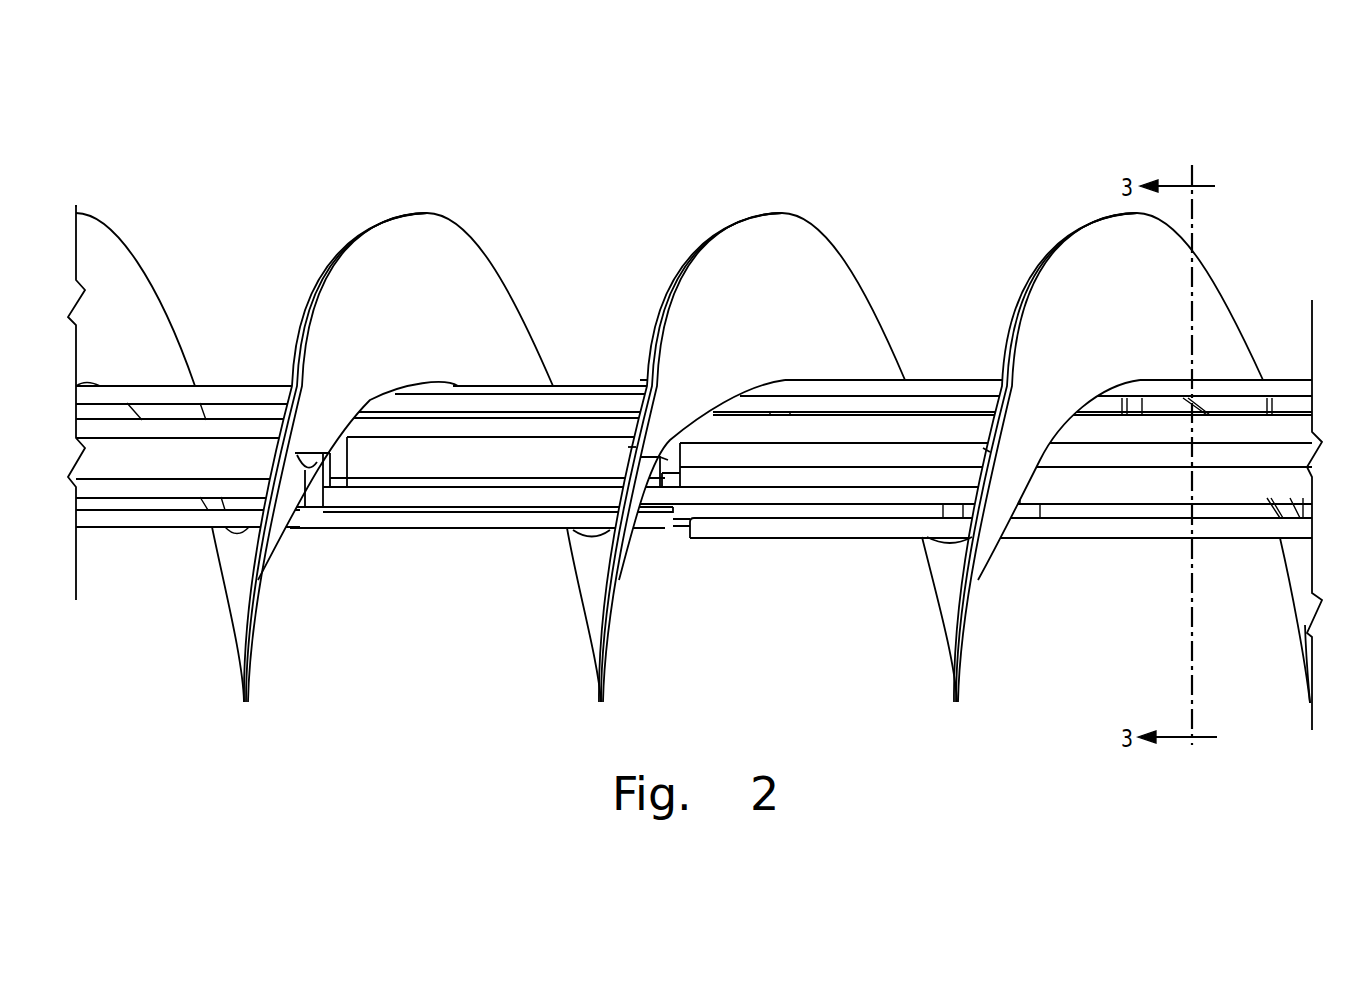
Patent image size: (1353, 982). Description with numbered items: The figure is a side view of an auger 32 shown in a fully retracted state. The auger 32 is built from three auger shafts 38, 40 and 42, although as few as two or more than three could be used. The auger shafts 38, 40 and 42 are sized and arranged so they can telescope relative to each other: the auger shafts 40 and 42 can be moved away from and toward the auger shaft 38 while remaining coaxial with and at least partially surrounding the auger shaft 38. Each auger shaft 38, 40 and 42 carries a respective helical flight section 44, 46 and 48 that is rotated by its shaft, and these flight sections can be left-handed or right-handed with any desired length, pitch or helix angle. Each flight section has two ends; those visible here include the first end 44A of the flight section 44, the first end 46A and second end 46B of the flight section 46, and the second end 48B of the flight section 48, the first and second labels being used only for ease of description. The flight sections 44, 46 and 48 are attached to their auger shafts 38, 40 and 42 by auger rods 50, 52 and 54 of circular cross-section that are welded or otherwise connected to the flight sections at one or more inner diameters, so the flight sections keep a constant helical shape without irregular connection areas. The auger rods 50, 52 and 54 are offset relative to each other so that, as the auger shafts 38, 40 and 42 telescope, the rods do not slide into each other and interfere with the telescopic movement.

The auger 32 is at (922, 148).
The auger shaft 38 is at (177, 460).
The auger shaft 40 is at (500, 460).
The auger shaft 42 is at (850, 433).
The flight section 44 is at (138, 268).
The first end 44A is at (633, 446).
The flight section 46 is at (508, 285).
The first end 46A is at (668, 460).
The second end 46B is at (322, 468).
The flight section 48 is at (848, 256).
The second end 48B is at (983, 448).
The auger rod 50 is at (208, 392).
The auger rod 52 is at (890, 400).
The auger rod 54 is at (1222, 378).